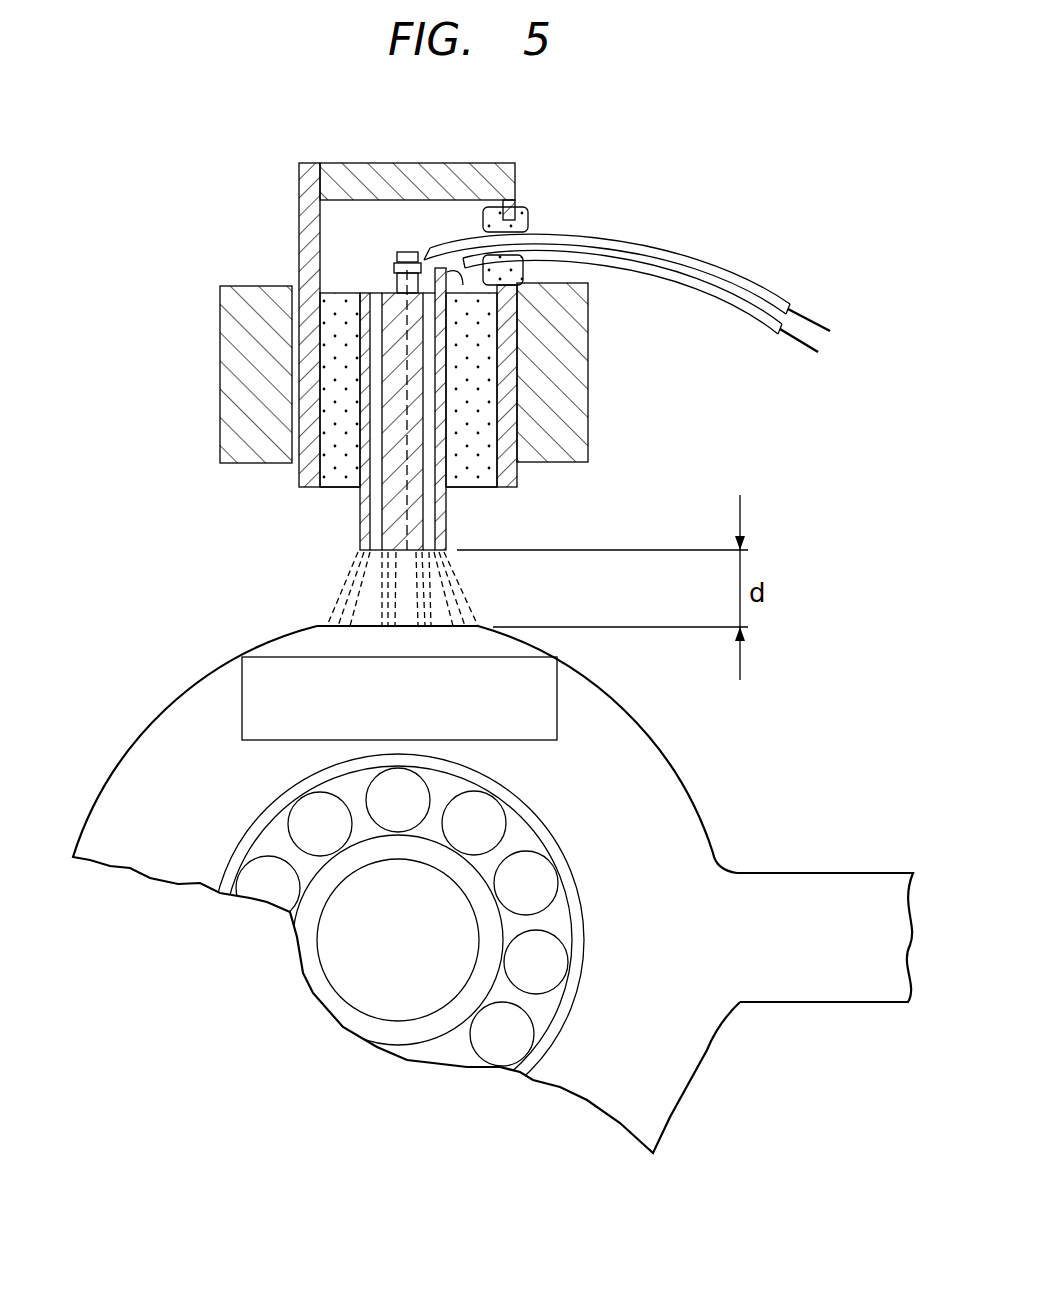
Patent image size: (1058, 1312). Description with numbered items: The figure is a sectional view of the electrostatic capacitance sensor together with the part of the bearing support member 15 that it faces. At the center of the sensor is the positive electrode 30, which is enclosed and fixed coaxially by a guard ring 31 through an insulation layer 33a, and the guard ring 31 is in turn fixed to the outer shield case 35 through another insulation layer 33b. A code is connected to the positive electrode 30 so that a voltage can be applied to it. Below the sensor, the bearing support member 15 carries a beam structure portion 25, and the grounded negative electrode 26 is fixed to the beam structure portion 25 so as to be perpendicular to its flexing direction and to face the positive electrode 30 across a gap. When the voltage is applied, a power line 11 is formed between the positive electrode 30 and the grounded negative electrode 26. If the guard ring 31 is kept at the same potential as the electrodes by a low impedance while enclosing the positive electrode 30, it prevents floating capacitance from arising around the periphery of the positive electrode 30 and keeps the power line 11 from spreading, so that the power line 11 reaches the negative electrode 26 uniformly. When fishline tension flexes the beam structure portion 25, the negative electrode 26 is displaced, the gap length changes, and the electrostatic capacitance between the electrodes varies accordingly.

The shield case 35 is at (477, 163).
The bearing support member 15 is at (578, 323).
The insulation layer 33b is at (478, 357).
The insulation layer 33a is at (430, 456).
The guard ring 31 is at (365, 383).
The positive electrode 30 is at (406, 512).
The power line 11 is at (407, 588).
The negative electrode 26 is at (312, 626).
The beam structure portion 25 is at (767, 893).